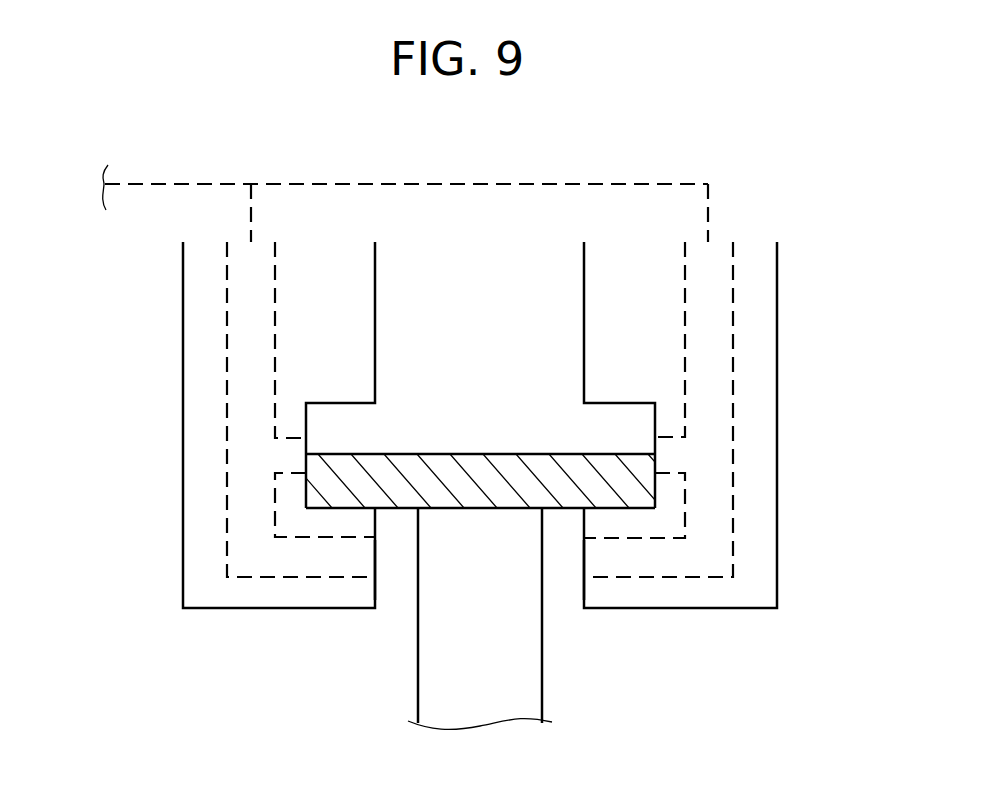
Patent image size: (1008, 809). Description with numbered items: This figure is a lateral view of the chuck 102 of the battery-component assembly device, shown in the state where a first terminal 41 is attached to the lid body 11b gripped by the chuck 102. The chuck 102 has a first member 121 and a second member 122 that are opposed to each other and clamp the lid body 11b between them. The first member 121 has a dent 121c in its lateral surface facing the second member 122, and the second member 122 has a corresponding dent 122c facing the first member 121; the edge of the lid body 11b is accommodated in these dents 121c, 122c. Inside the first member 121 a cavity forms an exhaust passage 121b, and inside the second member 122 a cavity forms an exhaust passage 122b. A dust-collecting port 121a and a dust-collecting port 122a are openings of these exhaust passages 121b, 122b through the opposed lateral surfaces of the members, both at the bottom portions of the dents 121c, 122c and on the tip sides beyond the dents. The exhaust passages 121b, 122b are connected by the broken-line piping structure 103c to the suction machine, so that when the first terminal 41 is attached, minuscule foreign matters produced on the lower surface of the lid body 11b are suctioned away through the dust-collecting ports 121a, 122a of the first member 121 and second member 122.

The piping structure 103c is at (548, 184).
The chuck 102 is at (153, 303).
The first member 121 is at (183, 472).
The dust-collecting port 121a is at (309, 440).
The exhaust passage 121b is at (227, 380).
The dent 121c is at (343, 406).
The second member 122 is at (777, 470).
The dust-collecting port 122a is at (652, 447).
The exhaust passage 122b is at (734, 385).
The dent 122c is at (616, 406).
The lid body 11b is at (465, 452).
The first terminal 41 is at (406, 697).